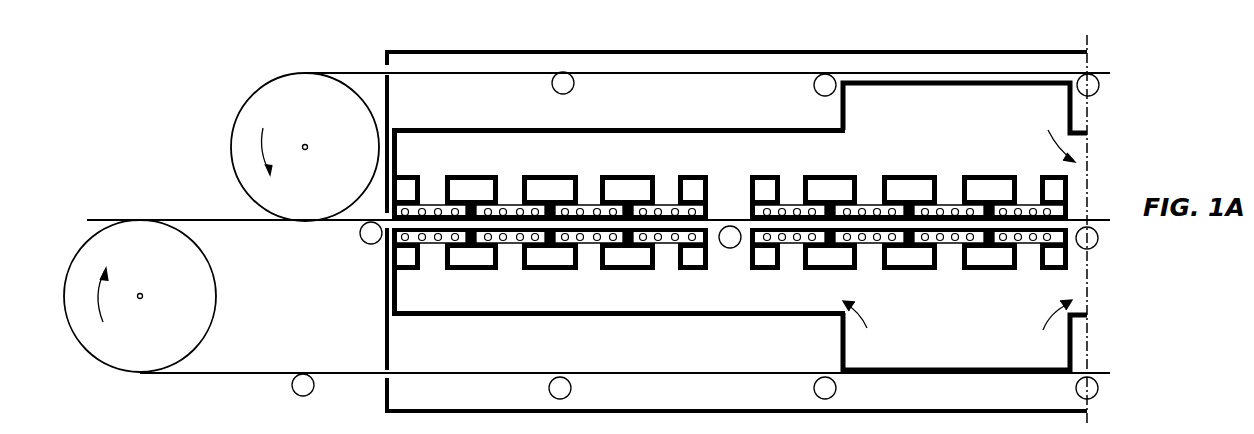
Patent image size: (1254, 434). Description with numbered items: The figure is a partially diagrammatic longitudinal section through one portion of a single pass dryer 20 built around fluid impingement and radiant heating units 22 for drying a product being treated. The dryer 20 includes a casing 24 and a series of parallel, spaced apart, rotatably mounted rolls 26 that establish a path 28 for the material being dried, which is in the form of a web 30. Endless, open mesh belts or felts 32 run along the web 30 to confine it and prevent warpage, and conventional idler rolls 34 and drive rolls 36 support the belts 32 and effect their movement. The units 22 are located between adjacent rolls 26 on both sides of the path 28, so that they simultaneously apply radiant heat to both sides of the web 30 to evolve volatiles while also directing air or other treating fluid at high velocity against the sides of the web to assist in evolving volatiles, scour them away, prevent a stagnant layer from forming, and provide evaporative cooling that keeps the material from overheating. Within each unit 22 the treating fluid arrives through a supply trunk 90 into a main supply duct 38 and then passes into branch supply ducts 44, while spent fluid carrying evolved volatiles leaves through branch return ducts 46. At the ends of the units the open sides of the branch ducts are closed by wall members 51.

The single pass dryer 20 is at (290, 45).
The fluid impingement and radiant heating unit 22 is at (730, 199).
The casing 24 is at (937, 52).
The roll 26 is at (366, 243).
The path 28 is at (745, 222).
The web 30 is at (92, 218).
The endless open mesh belt 32 is at (437, 75).
The idler roll 34 is at (575, 86).
The drive roll 36 is at (245, 113).
The main supply duct 38 is at (458, 130).
The branch supply duct 44 is at (588, 186).
The branch return duct 46 is at (910, 193).
The wall member 51 is at (750, 186).
The supply trunk 90 is at (875, 81).